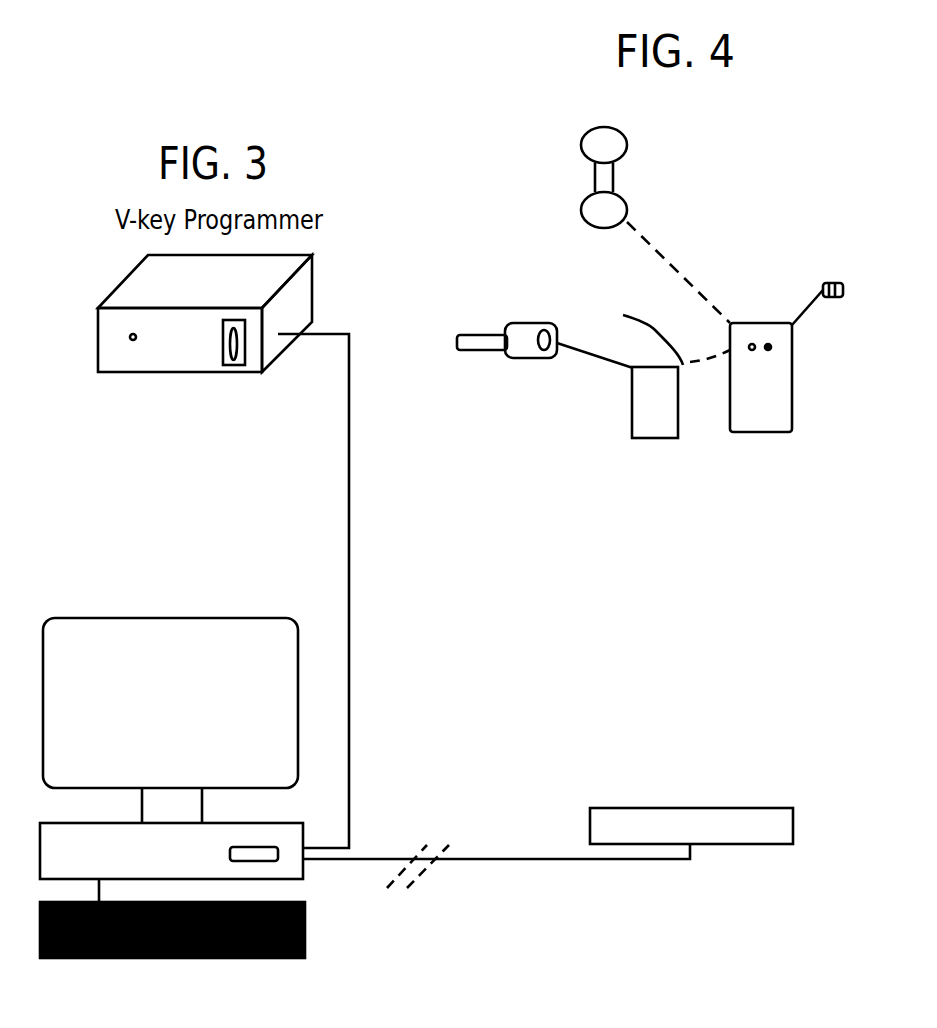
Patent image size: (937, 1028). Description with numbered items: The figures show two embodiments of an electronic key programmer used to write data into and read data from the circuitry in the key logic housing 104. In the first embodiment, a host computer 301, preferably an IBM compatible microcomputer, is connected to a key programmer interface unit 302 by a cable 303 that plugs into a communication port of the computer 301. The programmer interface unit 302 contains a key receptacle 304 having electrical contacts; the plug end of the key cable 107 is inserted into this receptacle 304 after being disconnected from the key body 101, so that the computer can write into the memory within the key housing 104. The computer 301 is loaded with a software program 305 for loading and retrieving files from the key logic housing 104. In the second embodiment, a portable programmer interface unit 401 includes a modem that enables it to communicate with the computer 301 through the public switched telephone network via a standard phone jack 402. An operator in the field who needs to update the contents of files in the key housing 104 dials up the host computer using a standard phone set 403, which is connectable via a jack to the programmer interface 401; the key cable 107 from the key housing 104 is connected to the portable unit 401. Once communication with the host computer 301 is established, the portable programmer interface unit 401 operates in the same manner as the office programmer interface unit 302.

In FIG. 3, the host computer 301 is at (135, 618).
In FIG. 3, the key programmer interface unit 302 is at (117, 295).
In FIG. 3, the cable 303 is at (349, 520).
In FIG. 3, the key receptacle 304 is at (228, 367).
In FIG. 3, the software program 305 is at (790, 805).
In FIG. 4, the key body 101 is at (522, 323).
In FIG. 4, the key logic housing 104 is at (632, 438).
In FIG. 4, the key cable 107 is at (592, 353).
In FIG. 4, the portable programmer interface unit 401 is at (757, 432).
In FIG. 4, the phone jack 402 is at (835, 282).
In FIG. 4, the phone set 403 is at (620, 130).